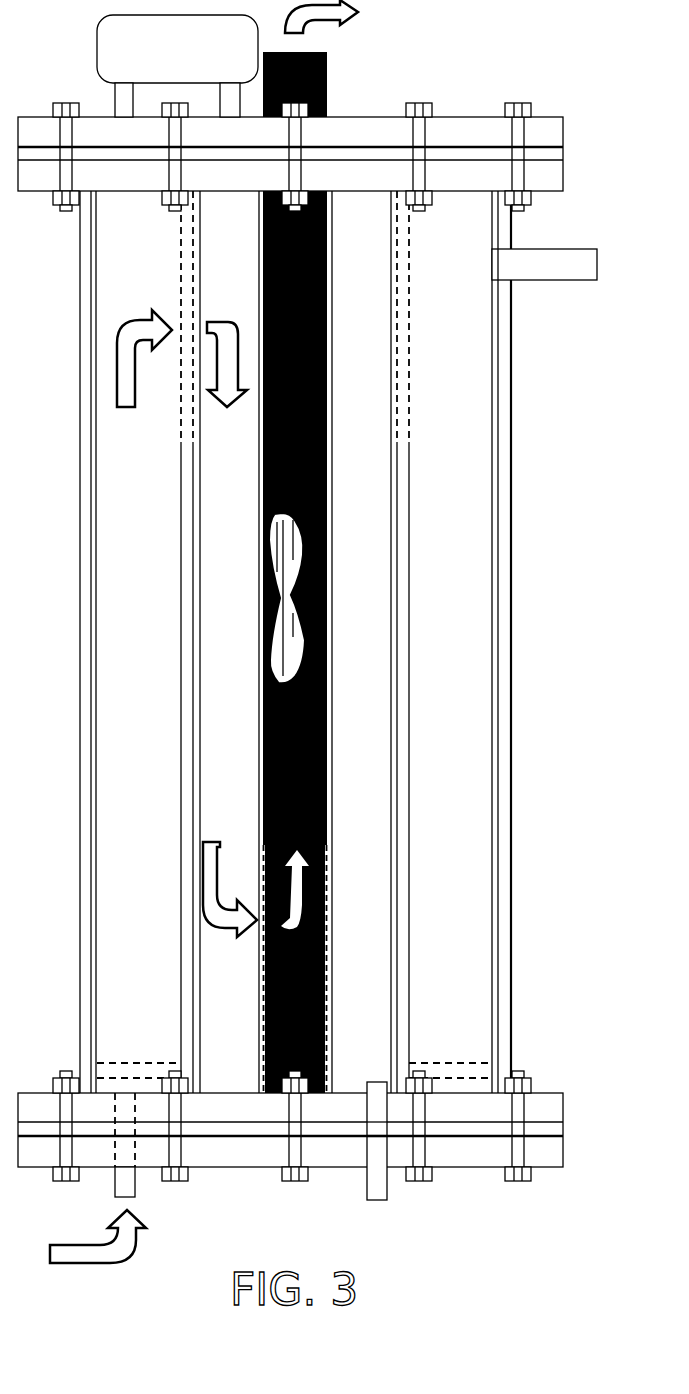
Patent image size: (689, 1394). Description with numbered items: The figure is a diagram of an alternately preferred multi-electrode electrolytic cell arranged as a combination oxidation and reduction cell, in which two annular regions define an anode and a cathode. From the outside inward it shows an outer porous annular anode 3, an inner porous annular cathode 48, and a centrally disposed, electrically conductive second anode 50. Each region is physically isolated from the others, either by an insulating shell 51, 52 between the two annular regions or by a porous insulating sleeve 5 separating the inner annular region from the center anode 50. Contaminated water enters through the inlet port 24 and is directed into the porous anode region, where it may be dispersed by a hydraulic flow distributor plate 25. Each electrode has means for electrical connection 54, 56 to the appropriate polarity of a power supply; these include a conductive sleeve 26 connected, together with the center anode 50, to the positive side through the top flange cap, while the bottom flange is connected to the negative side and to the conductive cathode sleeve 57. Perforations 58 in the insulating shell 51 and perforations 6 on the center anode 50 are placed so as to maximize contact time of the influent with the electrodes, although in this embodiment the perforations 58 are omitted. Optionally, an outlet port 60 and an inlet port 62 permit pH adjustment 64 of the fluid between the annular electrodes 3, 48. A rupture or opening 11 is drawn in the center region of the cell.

The outer porous annular anode 3 is at (146, 502).
The porous insulating sleeve 5 is at (361, 630).
The perforations 6 is at (328, 936).
The rupture in membrane 11 is at (283, 597).
The inlet port 24 is at (137, 1186).
The hydraulic flow distributor plate 25 is at (487, 1070).
The conductive sleeve 26 is at (493, 780).
The inner porous annular cathode 48 is at (245, 502).
The second anode 50 is at (302, 413).
The insulating shell 51 is at (181, 615).
The insulating shell 52 is at (80, 620).
The means for electrical connection 54 is at (377, 1200).
The means for electrical connection 56 is at (597, 262).
The conductive cathode sleeve 57 is at (391, 892).
The perforations 58 is at (144, 325).
The outlet port 60 is at (114, 93).
The inlet port 62 is at (240, 96).
The pH adjustment 64 is at (164, 80).